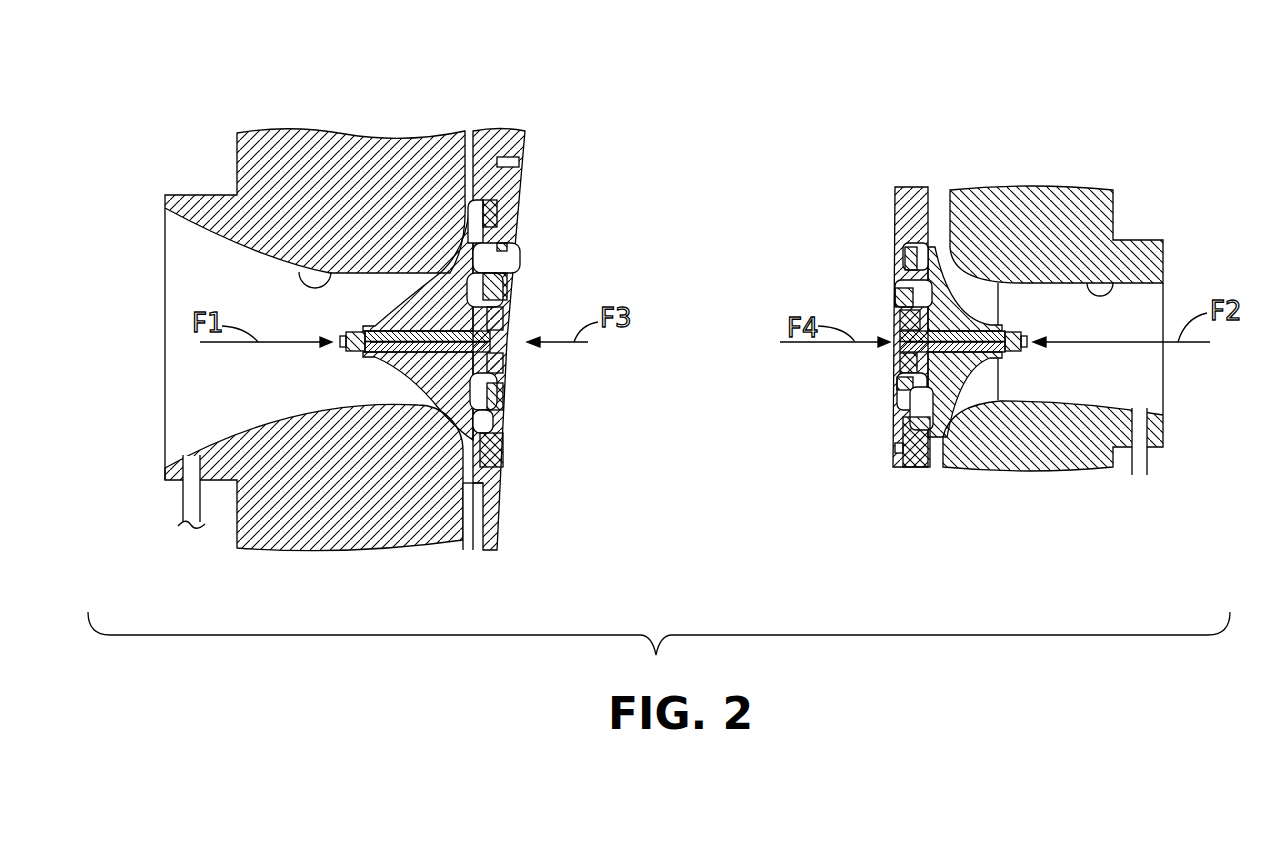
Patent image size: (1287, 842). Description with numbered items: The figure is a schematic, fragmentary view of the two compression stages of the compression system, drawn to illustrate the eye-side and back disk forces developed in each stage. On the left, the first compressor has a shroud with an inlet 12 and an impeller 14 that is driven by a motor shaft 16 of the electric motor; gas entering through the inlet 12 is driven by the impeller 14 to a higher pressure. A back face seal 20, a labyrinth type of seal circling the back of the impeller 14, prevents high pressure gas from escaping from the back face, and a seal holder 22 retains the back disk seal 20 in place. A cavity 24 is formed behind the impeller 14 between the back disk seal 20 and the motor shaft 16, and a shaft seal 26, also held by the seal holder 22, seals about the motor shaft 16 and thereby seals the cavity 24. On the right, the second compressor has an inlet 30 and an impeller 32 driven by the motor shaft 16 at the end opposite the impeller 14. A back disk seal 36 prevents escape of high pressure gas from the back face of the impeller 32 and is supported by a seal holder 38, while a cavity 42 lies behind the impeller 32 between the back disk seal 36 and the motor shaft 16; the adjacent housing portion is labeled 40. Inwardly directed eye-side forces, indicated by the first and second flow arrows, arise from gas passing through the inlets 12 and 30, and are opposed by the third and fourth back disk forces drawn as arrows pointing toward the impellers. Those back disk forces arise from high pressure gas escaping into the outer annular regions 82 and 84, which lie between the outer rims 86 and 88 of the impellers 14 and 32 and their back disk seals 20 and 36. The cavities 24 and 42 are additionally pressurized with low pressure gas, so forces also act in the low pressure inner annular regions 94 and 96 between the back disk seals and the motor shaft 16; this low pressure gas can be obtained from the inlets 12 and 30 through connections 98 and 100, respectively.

The inlet 12 is at (333, 274).
The impeller 14 is at (362, 371).
The motor shaft 16 is at (500, 362).
The back face seal 20 is at (503, 242).
The seal holder 22 is at (487, 522).
The cavity 24 is at (480, 420).
The shaft seal 26 is at (503, 395).
The inlet 30 is at (1117, 283).
The impeller 32 is at (970, 363).
The back disk seal 36 is at (900, 267).
The seal holder 38 is at (897, 380).
The fourth housing 40 is at (897, 470).
The cavity 42 is at (920, 390).
The outer annular region 82 is at (477, 203).
The outer annular region 84 is at (907, 227).
The outer rim 86 is at (467, 205).
The outer rim 88 is at (920, 427).
The inner annular region 94 is at (517, 287).
The inner annular region 96 is at (930, 293).
The connection 98 is at (182, 500).
The connection 100 is at (1147, 453).